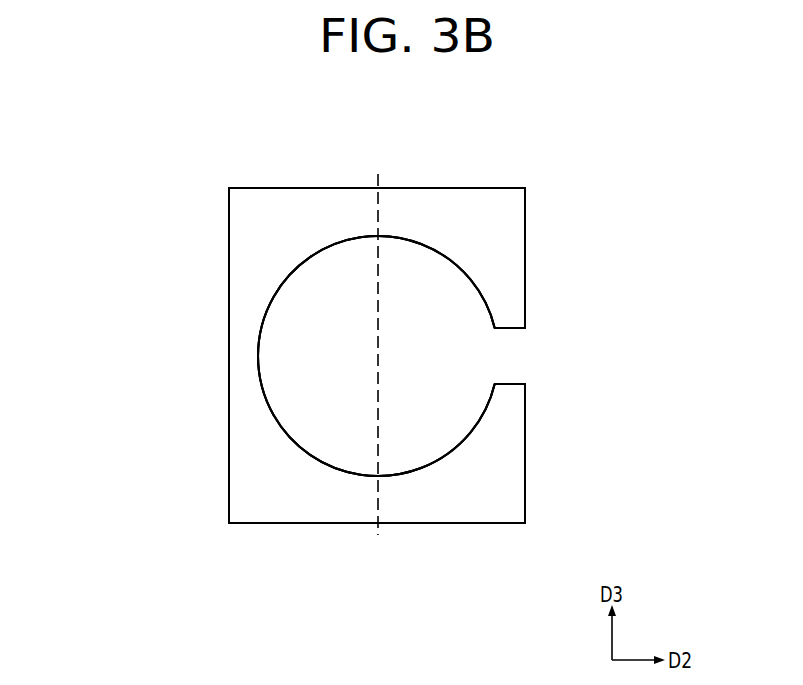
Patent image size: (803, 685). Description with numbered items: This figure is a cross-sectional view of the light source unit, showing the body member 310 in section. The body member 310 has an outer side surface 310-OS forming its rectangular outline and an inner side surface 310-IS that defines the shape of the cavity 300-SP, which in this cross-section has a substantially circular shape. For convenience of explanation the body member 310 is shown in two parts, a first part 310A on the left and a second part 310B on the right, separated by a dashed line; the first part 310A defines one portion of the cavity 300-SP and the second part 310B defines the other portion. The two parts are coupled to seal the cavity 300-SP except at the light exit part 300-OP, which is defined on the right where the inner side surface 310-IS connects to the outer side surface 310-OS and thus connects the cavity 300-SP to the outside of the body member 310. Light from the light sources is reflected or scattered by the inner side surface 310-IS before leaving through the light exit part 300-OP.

The body member 310 is at (564, 150).
The outer side surface 310-OS is at (229, 229).
The inner side surface 310-IS is at (293, 274).
The light exit part 300-OP is at (508, 330).
The cavity 300-SP is at (402, 359).
The first part 310A is at (309, 513).
The second part 310B is at (452, 513).